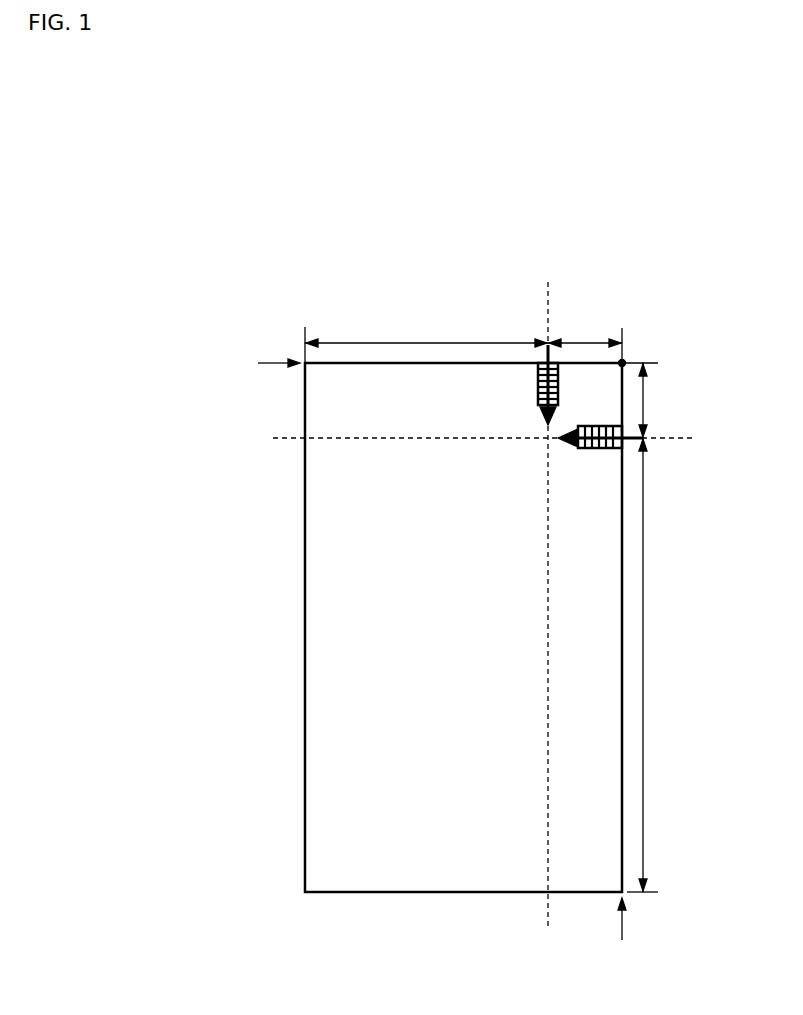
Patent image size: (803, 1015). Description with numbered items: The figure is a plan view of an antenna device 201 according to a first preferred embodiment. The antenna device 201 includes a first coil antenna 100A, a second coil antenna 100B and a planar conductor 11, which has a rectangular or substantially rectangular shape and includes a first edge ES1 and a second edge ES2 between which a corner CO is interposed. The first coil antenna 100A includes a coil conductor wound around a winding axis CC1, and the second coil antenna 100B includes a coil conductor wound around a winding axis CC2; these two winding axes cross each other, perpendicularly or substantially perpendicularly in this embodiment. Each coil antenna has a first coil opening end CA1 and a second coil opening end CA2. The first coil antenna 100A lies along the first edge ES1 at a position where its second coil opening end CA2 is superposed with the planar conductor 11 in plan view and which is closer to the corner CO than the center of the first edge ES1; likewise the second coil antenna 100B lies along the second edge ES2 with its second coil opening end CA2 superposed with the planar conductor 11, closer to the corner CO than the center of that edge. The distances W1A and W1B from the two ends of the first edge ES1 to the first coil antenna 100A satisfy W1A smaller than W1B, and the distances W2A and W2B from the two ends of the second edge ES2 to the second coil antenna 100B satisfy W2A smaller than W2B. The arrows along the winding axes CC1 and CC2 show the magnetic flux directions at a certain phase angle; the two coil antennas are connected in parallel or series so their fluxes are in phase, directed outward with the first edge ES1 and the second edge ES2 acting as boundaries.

The planar conductor 11 is at (323, 638).
The antenna device 201 is at (322, 241).
The first coil antenna 100A is at (536, 386).
The second coil antenna 100B is at (598, 450).
The winding axis CC1 is at (547, 576).
The winding axis CC2 is at (511, 438).
The first edge ES1 is at (256, 363).
The second edge ES2 is at (622, 942).
The distance W1A is at (585, 340).
The distance W1B is at (426, 340).
The distance W2A is at (649, 400).
The distance W2B is at (651, 665).
The corner CO is at (633, 352).
The first coil opening end CA1 is at (534, 352).
The second coil opening end CA2 is at (532, 422).